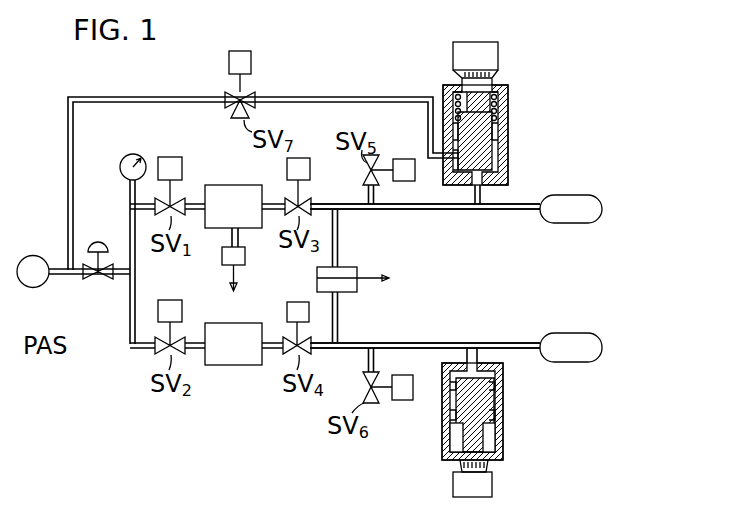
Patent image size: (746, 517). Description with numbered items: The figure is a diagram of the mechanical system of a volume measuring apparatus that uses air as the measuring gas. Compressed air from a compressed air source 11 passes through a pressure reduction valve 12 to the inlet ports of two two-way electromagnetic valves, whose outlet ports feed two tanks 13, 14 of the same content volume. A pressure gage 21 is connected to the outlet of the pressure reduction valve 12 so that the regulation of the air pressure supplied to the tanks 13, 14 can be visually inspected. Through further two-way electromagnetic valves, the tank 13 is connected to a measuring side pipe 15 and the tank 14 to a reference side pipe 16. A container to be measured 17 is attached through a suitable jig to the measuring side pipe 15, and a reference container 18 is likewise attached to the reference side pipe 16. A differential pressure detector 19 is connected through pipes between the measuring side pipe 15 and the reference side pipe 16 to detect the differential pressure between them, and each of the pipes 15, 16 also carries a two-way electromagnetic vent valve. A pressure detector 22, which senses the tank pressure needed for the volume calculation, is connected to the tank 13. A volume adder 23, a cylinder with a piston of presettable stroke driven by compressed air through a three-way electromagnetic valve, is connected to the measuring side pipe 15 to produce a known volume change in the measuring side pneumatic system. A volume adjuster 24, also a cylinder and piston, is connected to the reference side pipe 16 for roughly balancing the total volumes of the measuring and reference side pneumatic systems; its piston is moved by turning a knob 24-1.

The compressed air source 11 is at (37, 288).
The pressure reduction valve 12 is at (101, 288).
The tank 13 is at (249, 185).
The tank 14 is at (246, 367).
The measuring side pipe 15 is at (413, 212).
The reference side pipe 16 is at (435, 343).
The container to be measured 17 is at (565, 195).
The reference container 18 is at (565, 333).
The differential pressure detector 19 is at (347, 293).
The pressure gage 21 is at (139, 153).
The pressure detector 22 is at (248, 258).
The volume adder 23 is at (565, 108).
The volume adjuster 24 is at (504, 392).
The knob 24-1 is at (493, 486).